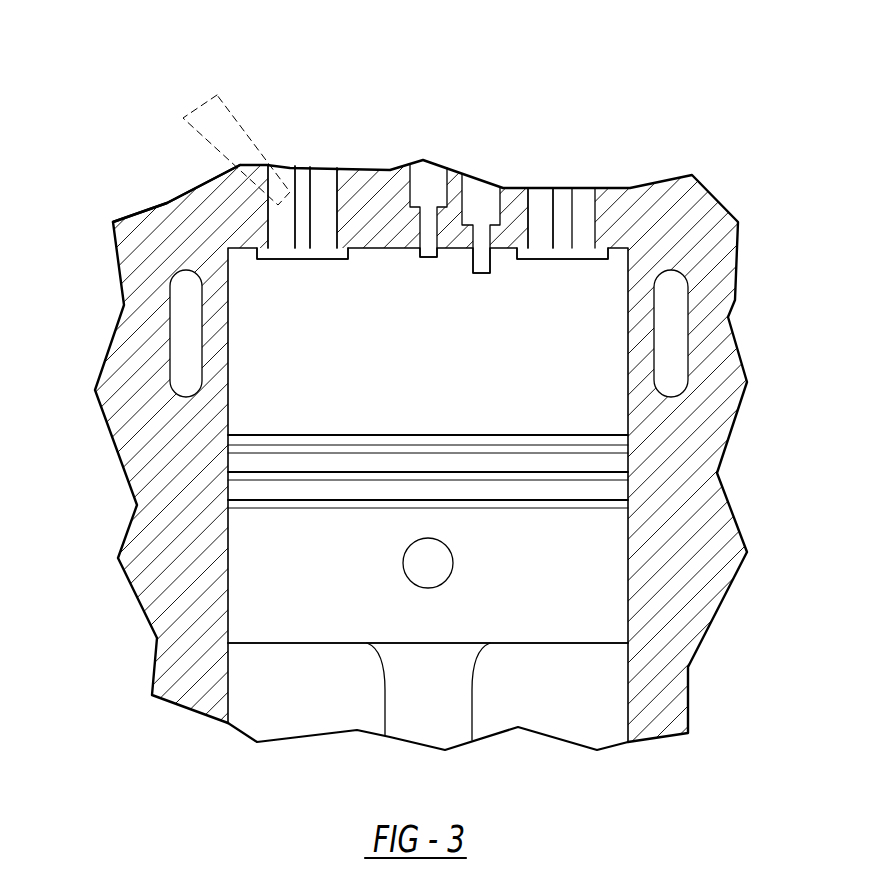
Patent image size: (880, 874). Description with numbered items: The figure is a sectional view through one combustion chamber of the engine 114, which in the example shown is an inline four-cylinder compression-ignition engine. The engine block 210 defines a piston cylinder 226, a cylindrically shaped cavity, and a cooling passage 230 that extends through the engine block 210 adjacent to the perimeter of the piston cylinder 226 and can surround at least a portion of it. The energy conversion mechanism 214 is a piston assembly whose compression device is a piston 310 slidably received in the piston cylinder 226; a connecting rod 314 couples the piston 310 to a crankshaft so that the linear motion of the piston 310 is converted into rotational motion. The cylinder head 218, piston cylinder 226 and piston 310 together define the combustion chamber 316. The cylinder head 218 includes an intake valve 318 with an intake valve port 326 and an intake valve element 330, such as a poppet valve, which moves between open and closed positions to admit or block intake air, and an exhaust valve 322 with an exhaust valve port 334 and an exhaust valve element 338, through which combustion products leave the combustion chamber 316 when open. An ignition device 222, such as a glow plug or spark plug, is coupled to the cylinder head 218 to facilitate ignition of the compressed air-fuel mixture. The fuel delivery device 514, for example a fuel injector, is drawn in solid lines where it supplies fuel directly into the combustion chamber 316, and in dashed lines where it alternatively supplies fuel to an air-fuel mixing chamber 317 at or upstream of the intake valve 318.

The engine 114 is at (100, 212).
The engine block 210 is at (703, 438).
The energy conversion mechanism 214 is at (320, 662).
The cylinder head 218 is at (197, 213).
The ignition device 222 is at (473, 268).
The piston cylinder 226 is at (630, 355).
The cooling passage 230 is at (187, 352).
The piston 310 is at (530, 605).
The connecting rod 314 is at (430, 703).
The combustion chamber 316 is at (327, 405).
The air-fuel mixing chamber 317 is at (287, 178).
The intake valve 318 is at (280, 146).
The exhaust valve 322 is at (587, 177).
The intake valve port 326 is at (323, 192).
The intake valve element 330 is at (302, 260).
The exhaust valve port 334 is at (541, 195).
The exhaust valve element 338 is at (593, 260).
The fuel delivery device 514 is at (220, 120).